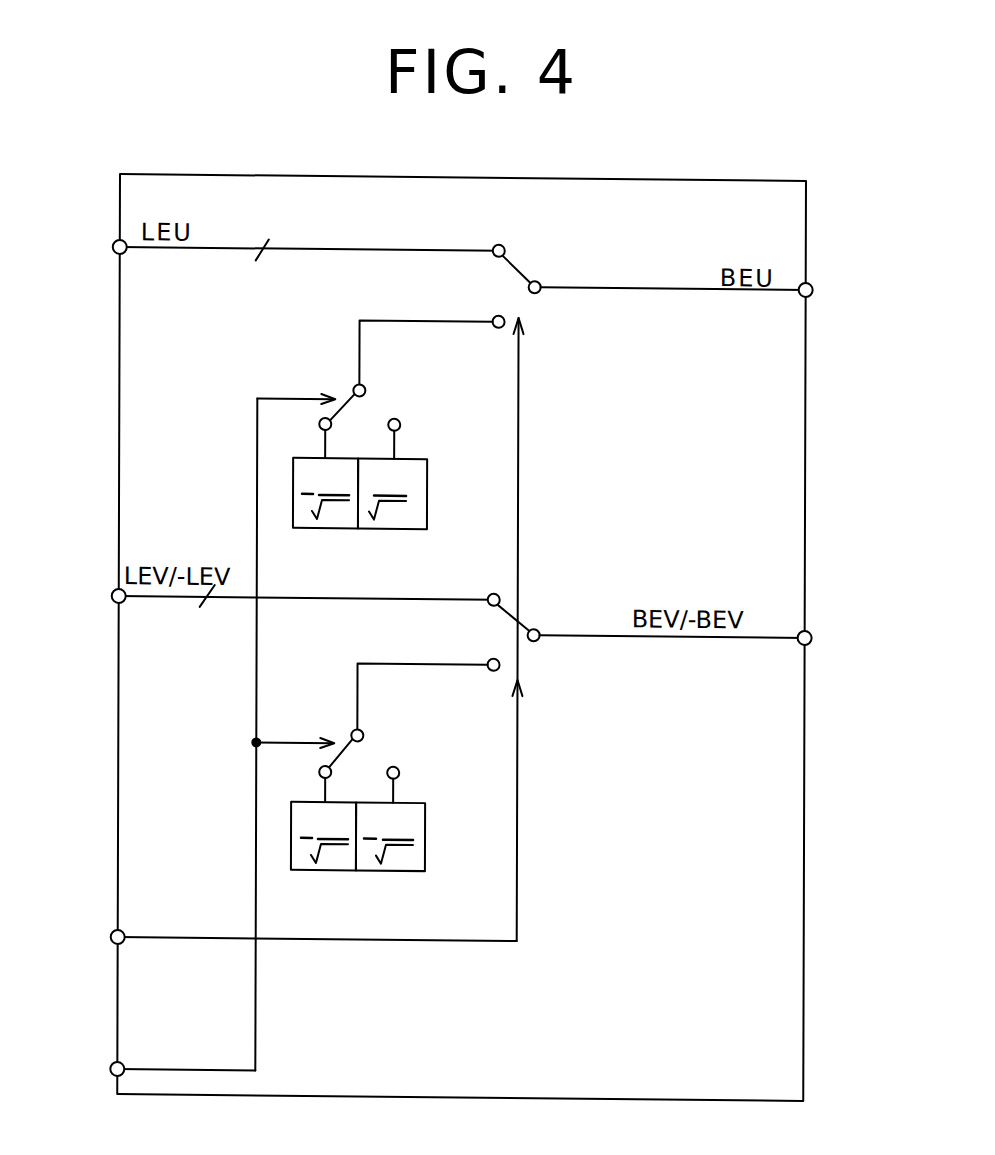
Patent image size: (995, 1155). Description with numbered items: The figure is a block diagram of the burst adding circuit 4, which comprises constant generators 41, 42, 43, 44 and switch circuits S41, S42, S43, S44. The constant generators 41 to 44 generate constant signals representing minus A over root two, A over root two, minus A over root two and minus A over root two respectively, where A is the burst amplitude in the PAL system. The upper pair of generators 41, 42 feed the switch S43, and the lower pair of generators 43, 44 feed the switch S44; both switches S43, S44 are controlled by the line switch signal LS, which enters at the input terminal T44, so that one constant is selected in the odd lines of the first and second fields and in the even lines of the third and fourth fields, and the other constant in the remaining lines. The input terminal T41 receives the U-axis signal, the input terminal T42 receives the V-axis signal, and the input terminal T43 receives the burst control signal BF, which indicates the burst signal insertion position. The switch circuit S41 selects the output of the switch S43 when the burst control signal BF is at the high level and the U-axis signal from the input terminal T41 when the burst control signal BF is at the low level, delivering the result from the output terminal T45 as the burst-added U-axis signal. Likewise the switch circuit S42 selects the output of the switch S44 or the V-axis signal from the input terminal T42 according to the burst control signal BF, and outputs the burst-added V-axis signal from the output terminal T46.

The burst adding circuit 4 is at (806, 795).
The constant generator 41 is at (317, 526).
The constant generator 42 is at (397, 526).
The constant generator 43 is at (318, 868).
The constant generator 44 is at (392, 868).
The switch circuit S41 is at (543, 288).
The switch circuit S42 is at (533, 635).
The switch S43 is at (374, 375).
The switch S44 is at (369, 720).
The input terminal T41 is at (113, 247).
The input terminal T42 is at (113, 596).
The input terminal T43 is at (111, 937).
The input terminal T44 is at (111, 1069).
The output terminal T45 is at (813, 283).
The output terminal T46 is at (813, 631).
The line switch signal LS is at (258, 1020).
The burst control signal BF is at (400, 937).